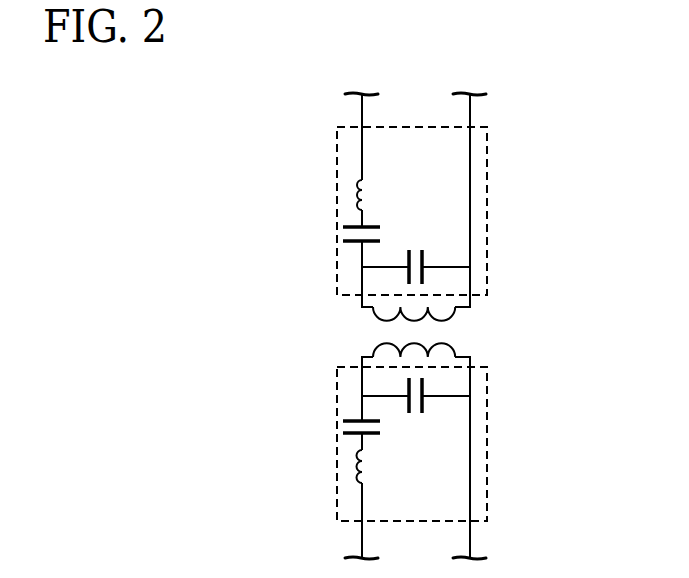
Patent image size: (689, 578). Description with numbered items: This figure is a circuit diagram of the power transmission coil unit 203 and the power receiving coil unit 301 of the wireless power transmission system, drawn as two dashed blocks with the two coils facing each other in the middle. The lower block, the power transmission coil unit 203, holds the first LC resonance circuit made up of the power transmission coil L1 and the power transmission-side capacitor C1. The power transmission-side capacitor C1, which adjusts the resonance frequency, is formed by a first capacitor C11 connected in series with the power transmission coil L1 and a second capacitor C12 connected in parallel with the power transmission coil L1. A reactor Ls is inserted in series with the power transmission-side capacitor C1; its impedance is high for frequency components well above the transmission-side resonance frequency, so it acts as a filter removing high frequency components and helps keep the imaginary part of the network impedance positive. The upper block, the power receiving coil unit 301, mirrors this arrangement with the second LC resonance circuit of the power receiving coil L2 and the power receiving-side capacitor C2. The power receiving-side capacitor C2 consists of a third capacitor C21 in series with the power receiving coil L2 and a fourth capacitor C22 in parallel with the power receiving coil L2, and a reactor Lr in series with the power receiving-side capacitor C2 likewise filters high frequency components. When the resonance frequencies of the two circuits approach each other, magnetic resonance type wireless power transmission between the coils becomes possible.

The power receiving coil unit 301 is at (310, 152).
The power transmission coil unit 203 is at (310, 382).
The reactor Lr is at (364, 195).
The power receiving-side capacitor C2 is at (240, 203).
The third capacitor C21 is at (349, 228).
The fourth capacitor C22 is at (400, 255).
The power receiving coil L2 is at (455, 318).
The power transmission coil L1 is at (455, 344).
The power transmission-side capacitor C1 is at (240, 410).
The second capacitor C12 is at (405, 404).
The first capacitor C11 is at (357, 436).
The reactor Ls is at (364, 466).